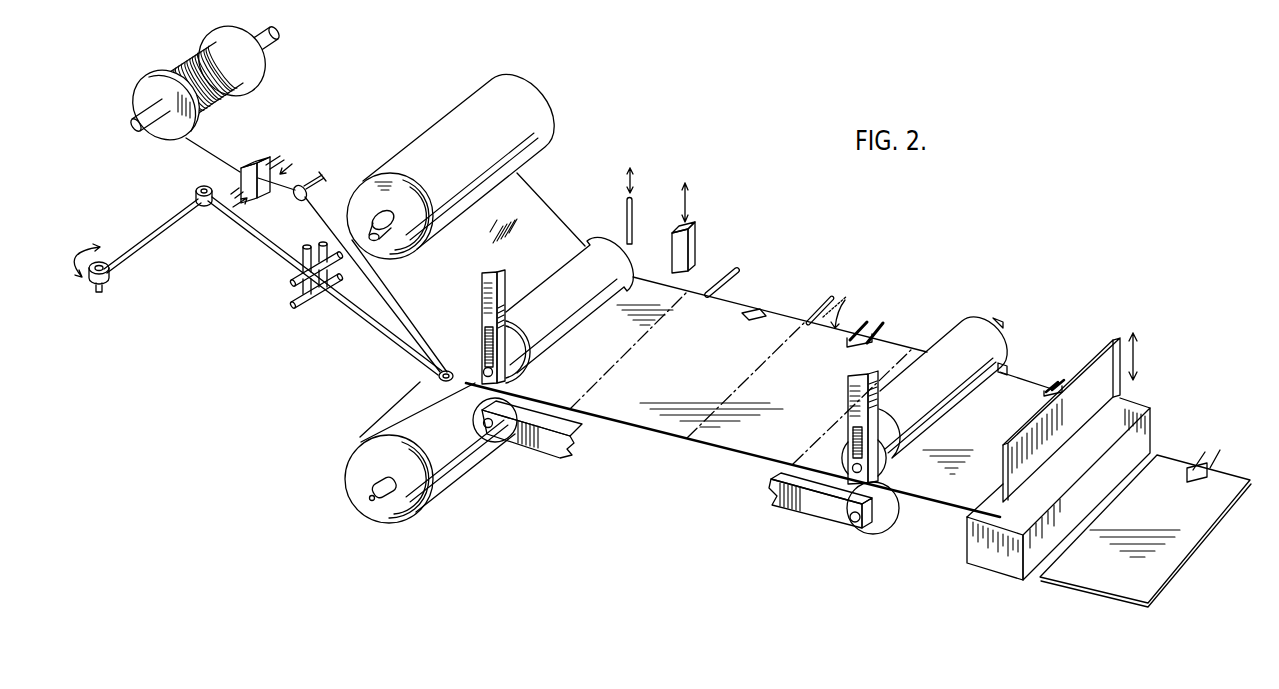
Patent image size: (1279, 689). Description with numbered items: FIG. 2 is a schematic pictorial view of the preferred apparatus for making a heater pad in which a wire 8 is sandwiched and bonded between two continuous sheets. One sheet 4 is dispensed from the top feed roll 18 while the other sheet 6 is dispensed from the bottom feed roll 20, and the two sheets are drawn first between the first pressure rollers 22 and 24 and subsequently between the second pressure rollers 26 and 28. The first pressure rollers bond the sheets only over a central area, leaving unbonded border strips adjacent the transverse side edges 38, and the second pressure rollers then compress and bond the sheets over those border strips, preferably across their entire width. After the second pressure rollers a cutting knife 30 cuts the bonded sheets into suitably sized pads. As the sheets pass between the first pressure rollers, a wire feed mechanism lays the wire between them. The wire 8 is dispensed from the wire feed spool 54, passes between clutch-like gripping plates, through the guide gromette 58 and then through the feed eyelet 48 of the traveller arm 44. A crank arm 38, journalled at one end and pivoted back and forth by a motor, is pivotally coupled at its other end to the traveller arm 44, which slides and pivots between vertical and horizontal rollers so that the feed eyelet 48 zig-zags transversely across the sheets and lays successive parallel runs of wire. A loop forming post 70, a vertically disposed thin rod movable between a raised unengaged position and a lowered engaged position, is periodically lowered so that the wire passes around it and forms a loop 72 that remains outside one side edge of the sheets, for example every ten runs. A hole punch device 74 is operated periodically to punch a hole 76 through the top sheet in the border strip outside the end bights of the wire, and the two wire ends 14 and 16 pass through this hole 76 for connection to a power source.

The bottom sheet 4 is at (532, 250).
The top sheet 6 is at (442, 382).
The wire 8 is at (227, 157).
The wire end 14 is at (843, 297).
The wire end 16 is at (816, 315).
The top feed roll 18 is at (373, 197).
The bottom feed roll 20 is at (403, 522).
The first pressure roller 22 is at (476, 412).
The first pressure roller 24 is at (534, 376).
The second pressure roller 26 is at (886, 447).
The second pressure roller 28 is at (889, 524).
The cutting knife 30 is at (1097, 370).
The crank arm 38 is at (141, 245).
The traveller arm 44 is at (362, 318).
The feed eyelet 48 is at (437, 376).
The wire feed spool 54 is at (263, 53).
The guide gromette 58 is at (300, 185).
The loop forming post 70 is at (627, 204).
The loop 72 is at (735, 272).
The hole punch device 74 is at (687, 244).
The hole 76 is at (742, 316).